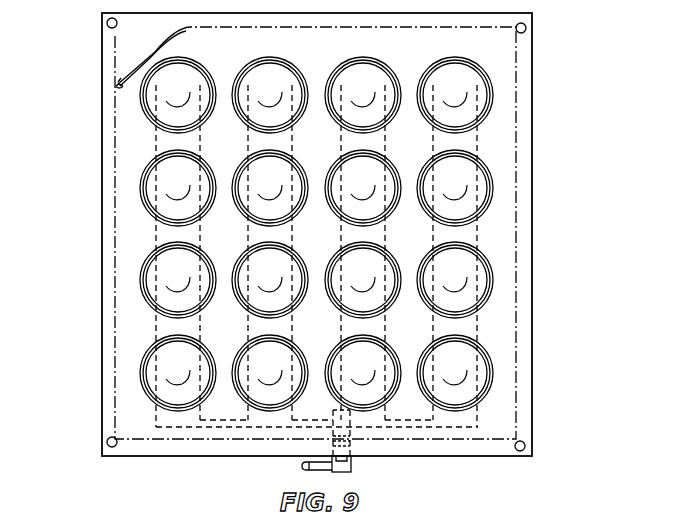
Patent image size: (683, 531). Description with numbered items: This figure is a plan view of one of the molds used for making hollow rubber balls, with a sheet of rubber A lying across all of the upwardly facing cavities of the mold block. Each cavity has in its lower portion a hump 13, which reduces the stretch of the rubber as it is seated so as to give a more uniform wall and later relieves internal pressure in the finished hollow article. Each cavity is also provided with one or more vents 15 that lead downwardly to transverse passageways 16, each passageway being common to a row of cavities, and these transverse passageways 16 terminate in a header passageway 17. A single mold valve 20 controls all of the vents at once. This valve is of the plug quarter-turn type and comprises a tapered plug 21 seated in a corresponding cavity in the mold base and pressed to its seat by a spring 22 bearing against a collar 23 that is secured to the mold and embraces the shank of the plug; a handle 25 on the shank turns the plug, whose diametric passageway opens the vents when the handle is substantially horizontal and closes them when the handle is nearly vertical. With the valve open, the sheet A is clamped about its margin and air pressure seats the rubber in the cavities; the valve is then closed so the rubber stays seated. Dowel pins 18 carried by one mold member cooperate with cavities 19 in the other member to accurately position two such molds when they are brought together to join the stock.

The hump 13 is at (385, 283).
The vent 15 is at (368, 187).
The transverse passageway 16 is at (294, 329).
The header passageway 17 is at (470, 432).
The dowel pin 18 is at (107, 24).
The dowel cavity 19 is at (527, 29).
The mold valve 20 is at (352, 462).
The tapered plug 21 is at (330, 428).
The spring 22 is at (353, 440).
The collar 23 is at (393, 456).
The handle 25 is at (320, 470).
The sheet of rubber A is at (118, 84).